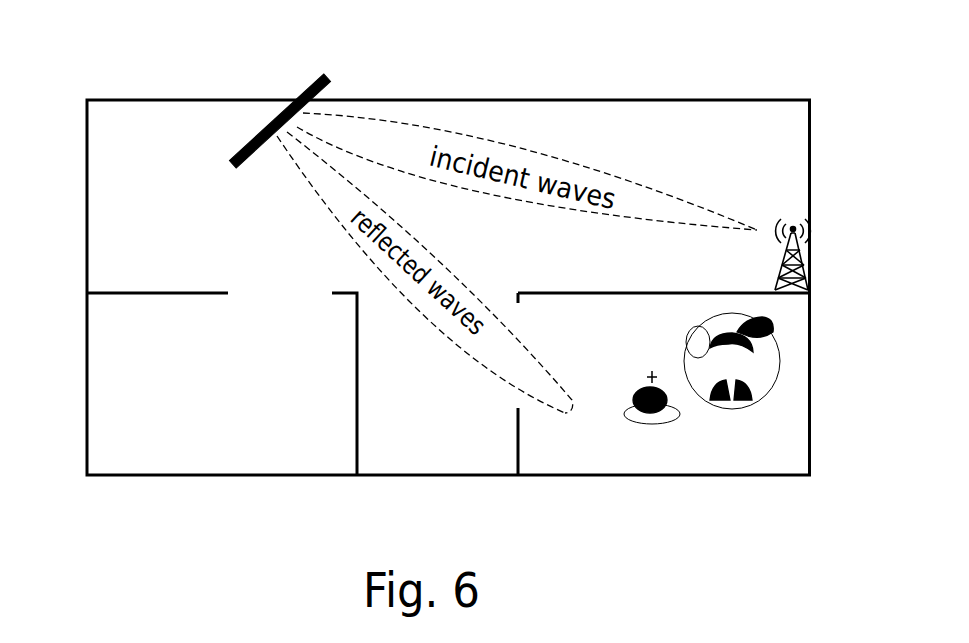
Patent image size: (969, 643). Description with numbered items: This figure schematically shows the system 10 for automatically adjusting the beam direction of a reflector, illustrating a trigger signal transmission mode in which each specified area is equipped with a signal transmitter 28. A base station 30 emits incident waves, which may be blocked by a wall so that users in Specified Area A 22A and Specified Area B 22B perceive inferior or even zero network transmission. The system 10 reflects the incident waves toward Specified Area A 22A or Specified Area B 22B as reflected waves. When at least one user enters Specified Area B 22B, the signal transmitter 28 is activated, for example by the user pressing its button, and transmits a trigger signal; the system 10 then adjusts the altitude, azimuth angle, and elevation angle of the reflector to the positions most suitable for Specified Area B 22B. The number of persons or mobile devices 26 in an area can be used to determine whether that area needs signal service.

The system for automatically adjusting the beam direction of a reflector 10 is at (270, 130).
The Specified Area A 22A is at (203, 477).
The Specified Area B 22B is at (686, 477).
The mobile devices 26 is at (777, 357).
The signal transmitter 28 is at (622, 397).
The base station 30 is at (803, 264).